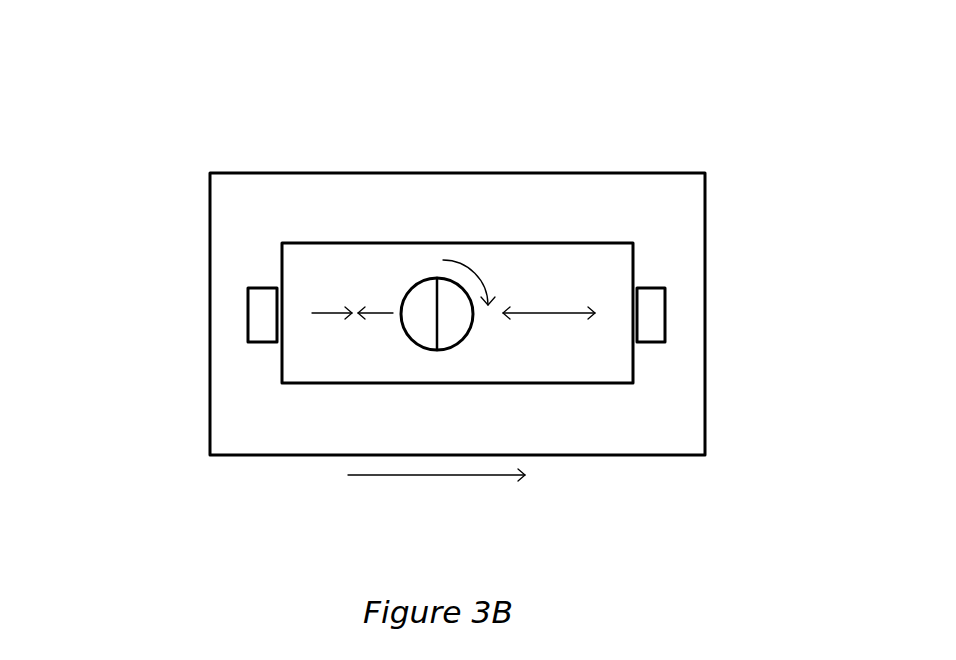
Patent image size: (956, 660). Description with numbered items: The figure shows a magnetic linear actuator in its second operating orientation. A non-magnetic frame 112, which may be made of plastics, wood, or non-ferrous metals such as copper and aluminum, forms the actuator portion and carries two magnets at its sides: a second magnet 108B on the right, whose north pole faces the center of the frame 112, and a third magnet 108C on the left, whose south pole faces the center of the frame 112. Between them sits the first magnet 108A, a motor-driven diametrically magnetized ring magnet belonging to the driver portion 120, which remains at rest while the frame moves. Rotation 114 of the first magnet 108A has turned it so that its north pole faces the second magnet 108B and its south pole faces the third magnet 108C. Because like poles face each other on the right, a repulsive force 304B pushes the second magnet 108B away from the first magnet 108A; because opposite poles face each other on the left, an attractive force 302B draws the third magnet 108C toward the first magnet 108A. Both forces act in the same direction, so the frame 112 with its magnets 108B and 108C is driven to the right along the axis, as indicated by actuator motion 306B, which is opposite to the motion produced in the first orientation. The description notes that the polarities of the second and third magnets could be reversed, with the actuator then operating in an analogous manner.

The frame 112 is at (237, 456).
The driver portion 120 is at (433, 278).
The third magnet 108C is at (246, 300).
The second magnet 108B is at (666, 331).
The first magnet 108A is at (463, 354).
The attractive force 302B is at (353, 306).
The rotation 114 is at (467, 262).
The repulsive force 304B is at (533, 313).
The actuator motion 306B is at (430, 476).